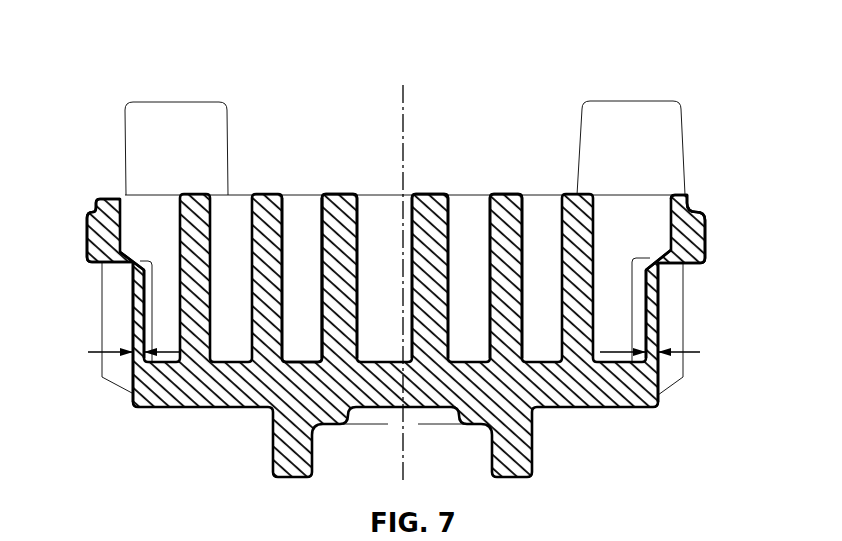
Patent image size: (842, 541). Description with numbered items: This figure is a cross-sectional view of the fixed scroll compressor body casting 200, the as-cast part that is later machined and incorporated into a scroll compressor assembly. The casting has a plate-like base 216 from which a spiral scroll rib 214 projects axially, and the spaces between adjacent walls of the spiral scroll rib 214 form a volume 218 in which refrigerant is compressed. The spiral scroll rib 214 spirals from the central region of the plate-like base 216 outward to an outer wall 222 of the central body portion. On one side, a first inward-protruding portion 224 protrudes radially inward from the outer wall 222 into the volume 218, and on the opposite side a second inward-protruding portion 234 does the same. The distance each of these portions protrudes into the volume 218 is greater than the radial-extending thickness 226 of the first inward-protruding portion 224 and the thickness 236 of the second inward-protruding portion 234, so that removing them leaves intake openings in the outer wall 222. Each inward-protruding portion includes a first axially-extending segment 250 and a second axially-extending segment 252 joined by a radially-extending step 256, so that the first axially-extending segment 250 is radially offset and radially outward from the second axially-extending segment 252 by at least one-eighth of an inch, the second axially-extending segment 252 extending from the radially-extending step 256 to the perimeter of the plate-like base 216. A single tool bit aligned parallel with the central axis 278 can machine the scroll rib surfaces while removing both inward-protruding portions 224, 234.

The fixed scroll compressor body casting 200 is at (712, 49).
The central axis 278 is at (403, 97).
The spiral scroll rib 214 is at (341, 195).
The plate-like base 216 is at (300, 360).
The volume 218 is at (463, 186).
The outer wall 222 is at (132, 330).
The first inward-protruding portion 224 is at (143, 302).
The radial-extending thickness 226 is at (93, 353).
The second inward-protruding portion 234 is at (648, 297).
The thickness 236 is at (700, 353).
The first axially-extending segment 250 is at (88, 228).
The second axially-extending segment 252 is at (132, 292).
The radially-extending step 256 is at (142, 257).